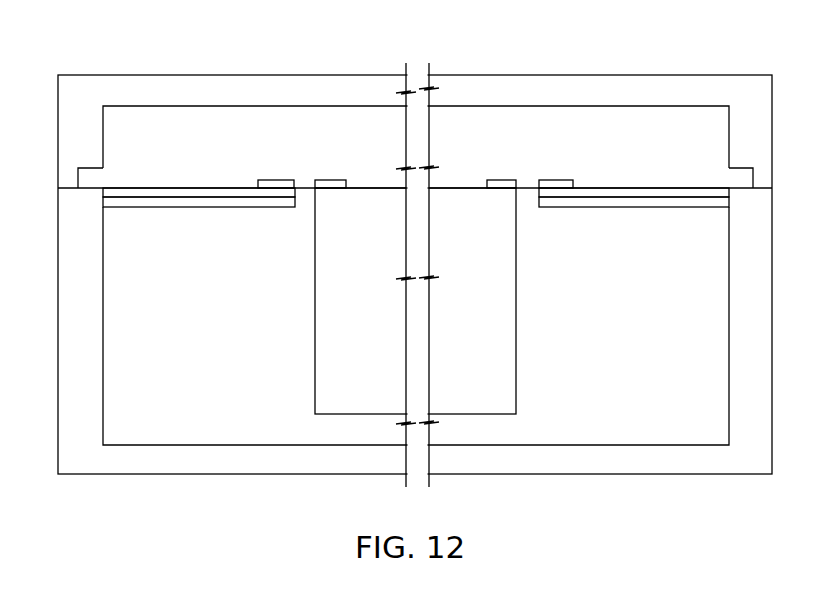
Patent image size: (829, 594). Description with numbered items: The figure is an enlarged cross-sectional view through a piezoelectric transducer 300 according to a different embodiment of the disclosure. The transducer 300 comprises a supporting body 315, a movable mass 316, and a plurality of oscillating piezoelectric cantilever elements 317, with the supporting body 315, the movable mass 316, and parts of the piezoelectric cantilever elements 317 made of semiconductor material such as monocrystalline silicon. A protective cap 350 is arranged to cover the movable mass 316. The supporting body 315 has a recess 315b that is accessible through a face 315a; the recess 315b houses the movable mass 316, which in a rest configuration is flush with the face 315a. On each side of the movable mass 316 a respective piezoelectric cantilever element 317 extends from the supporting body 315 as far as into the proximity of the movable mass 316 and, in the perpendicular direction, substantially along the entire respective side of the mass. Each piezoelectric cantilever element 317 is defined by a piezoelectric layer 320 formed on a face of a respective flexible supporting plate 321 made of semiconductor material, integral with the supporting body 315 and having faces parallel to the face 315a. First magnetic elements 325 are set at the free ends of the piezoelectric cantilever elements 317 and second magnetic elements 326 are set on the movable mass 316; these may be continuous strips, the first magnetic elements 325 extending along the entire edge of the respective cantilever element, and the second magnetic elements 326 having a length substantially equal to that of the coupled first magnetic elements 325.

The piezoelectric transducer 300 is at (401, 263).
The protective cap 350 is at (693, 62).
The supporting body 315 is at (163, 462).
The face 315a is at (67, 188).
The recess 315b is at (599, 427).
The movable mass 316 is at (345, 322).
The piezoelectric cantilever element 317 is at (176, 244).
The piezoelectric layer 320 is at (160, 195).
The flexible supporting plate 321 is at (227, 203).
The first magnetic element 325 is at (277, 180).
The second magnetic element 326 is at (332, 180).